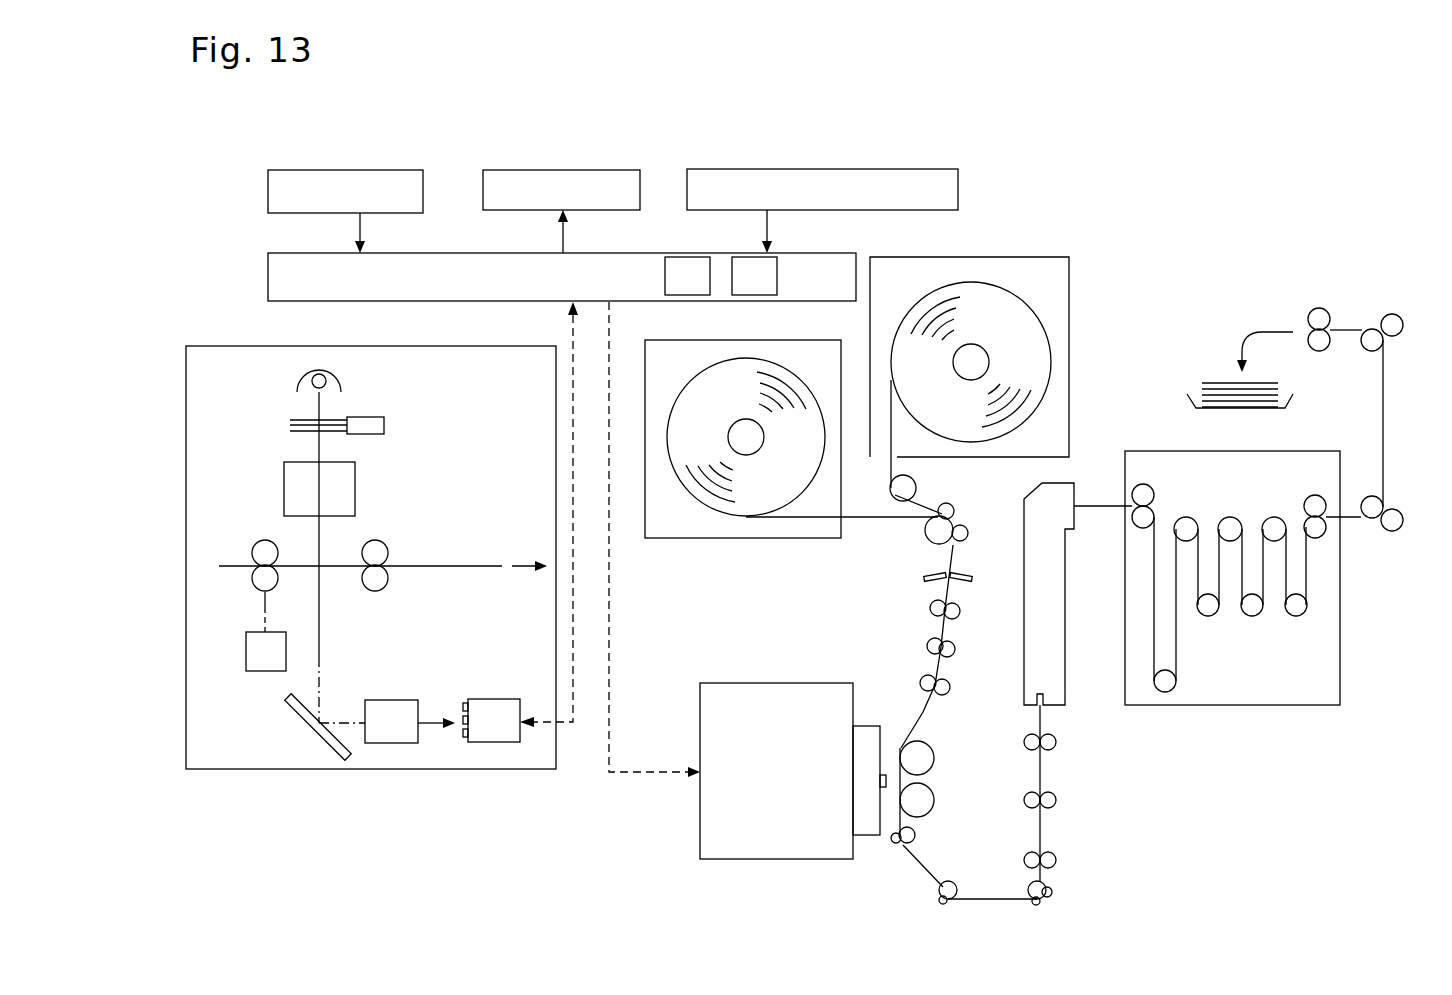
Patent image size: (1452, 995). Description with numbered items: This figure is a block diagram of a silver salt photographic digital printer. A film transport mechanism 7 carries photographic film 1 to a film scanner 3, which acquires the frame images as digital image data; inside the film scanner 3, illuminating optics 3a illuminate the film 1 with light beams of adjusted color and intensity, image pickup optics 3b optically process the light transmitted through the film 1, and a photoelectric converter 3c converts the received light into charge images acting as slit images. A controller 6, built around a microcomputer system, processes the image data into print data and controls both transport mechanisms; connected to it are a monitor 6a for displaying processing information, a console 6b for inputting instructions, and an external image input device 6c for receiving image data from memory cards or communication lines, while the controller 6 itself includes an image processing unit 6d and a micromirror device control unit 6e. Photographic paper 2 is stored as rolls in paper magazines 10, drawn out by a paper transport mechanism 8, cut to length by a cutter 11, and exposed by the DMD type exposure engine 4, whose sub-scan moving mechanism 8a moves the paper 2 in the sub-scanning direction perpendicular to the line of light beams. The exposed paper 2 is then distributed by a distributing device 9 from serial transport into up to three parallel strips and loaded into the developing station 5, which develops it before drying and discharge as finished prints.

The photographic film 1 is at (495, 565).
The photographic paper 2 is at (869, 520).
The film scanner 3 is at (232, 346).
The illuminating optics 3a is at (408, 442).
The image pickup optics 3b is at (370, 680).
The photoelectric converter 3c is at (492, 706).
The exposure engine 4 is at (726, 838).
The developing station 5 is at (1228, 705).
The controller 6 is at (845, 253).
The monitor 6a is at (352, 170).
The console 6b is at (572, 170).
The external image input device 6c is at (757, 170).
The image processing unit 6d is at (687, 276).
The micromirror device control unit 6e is at (754, 276).
The film transport mechanism 7 is at (237, 592).
The paper transport mechanism 8 is at (900, 877).
The sub-scan moving mechanism 8a is at (922, 800).
The distributing device 9 is at (1035, 655).
The paper magazines 10 is at (706, 540).
The cutter 11 is at (972, 578).